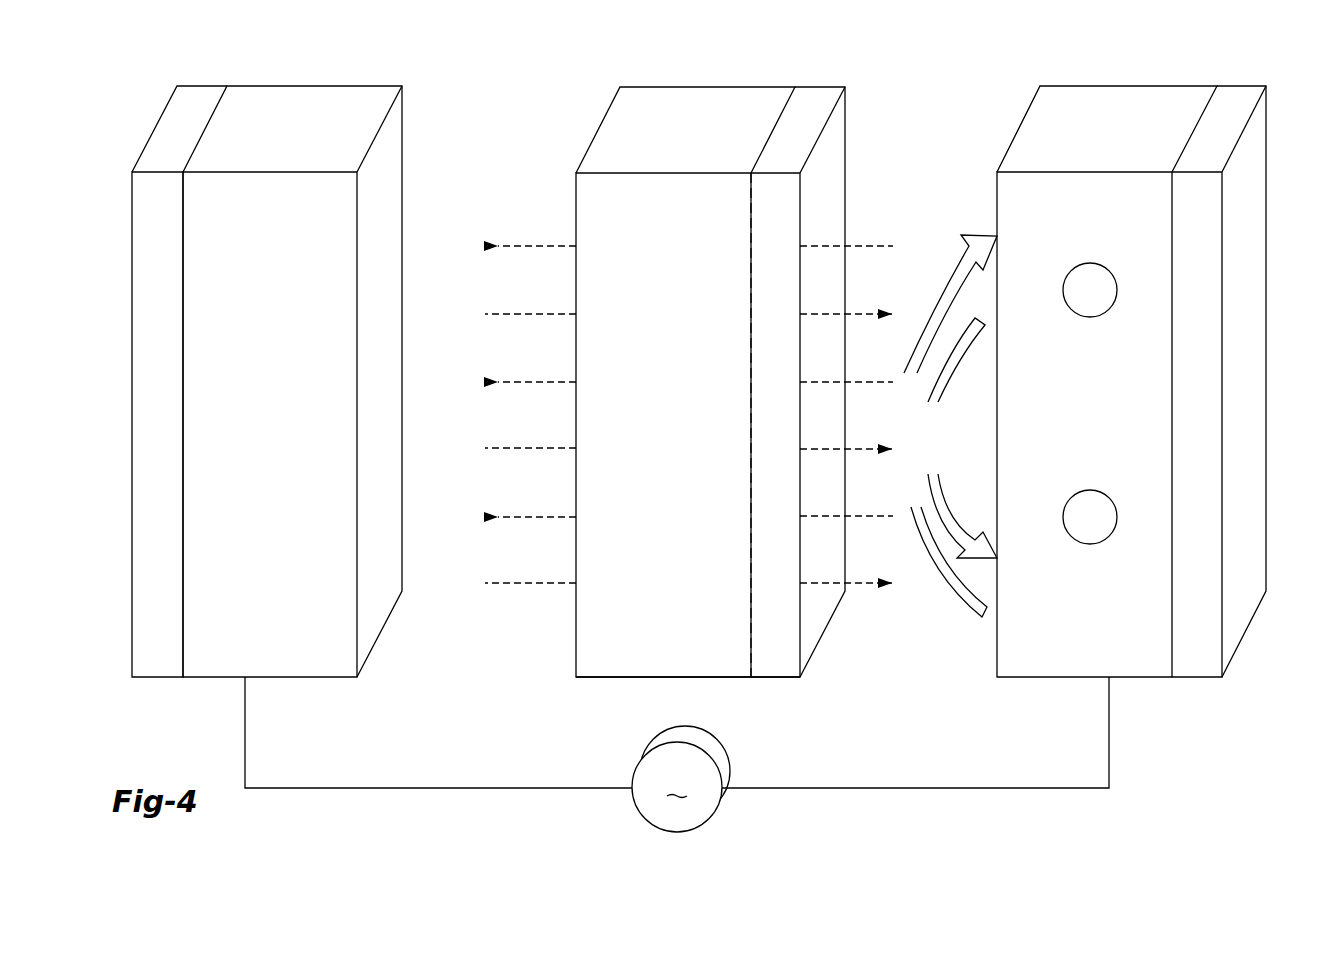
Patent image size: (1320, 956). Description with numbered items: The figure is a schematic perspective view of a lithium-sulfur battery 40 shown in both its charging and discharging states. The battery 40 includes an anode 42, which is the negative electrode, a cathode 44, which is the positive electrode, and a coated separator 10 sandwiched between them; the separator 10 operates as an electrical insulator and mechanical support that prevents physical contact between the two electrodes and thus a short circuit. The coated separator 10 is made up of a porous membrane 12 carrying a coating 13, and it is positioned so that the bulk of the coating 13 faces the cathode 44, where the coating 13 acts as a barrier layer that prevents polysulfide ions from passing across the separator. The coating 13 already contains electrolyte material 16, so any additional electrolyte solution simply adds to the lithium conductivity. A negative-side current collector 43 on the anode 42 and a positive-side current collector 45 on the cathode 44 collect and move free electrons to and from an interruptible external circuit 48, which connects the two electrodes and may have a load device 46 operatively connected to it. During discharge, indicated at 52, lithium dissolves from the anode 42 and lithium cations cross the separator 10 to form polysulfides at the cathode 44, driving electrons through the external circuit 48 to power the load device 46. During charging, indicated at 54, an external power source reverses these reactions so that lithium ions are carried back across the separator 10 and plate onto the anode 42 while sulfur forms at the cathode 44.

The coated separator 10 is at (720, 70).
The porous membrane 12 is at (652, 98).
The coating 13 is at (808, 103).
The electrolyte material 16 is at (602, 678).
The lithium-sulfur battery 40 is at (1278, 683).
The anode 42 is at (274, 412).
The negative-side current collector 43 is at (155, 587).
The cathode 44 is at (1101, 412).
The positive-side current collector 45 is at (1240, 205).
The load device 46 is at (687, 796).
The external circuit 48 is at (968, 789).
The battery discharge 52 is at (865, 313).
The charging 54 is at (535, 246).